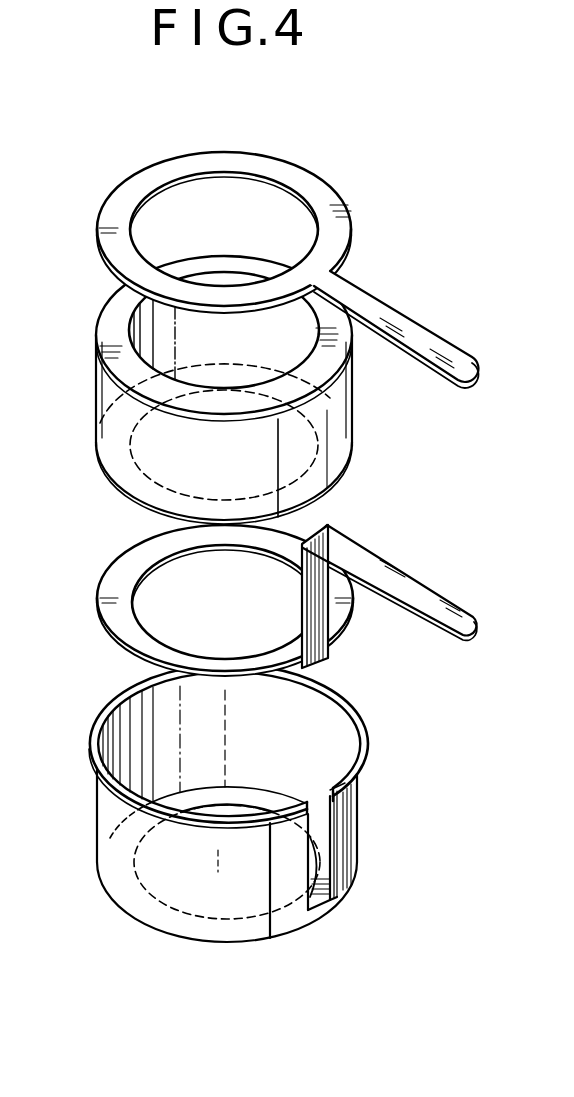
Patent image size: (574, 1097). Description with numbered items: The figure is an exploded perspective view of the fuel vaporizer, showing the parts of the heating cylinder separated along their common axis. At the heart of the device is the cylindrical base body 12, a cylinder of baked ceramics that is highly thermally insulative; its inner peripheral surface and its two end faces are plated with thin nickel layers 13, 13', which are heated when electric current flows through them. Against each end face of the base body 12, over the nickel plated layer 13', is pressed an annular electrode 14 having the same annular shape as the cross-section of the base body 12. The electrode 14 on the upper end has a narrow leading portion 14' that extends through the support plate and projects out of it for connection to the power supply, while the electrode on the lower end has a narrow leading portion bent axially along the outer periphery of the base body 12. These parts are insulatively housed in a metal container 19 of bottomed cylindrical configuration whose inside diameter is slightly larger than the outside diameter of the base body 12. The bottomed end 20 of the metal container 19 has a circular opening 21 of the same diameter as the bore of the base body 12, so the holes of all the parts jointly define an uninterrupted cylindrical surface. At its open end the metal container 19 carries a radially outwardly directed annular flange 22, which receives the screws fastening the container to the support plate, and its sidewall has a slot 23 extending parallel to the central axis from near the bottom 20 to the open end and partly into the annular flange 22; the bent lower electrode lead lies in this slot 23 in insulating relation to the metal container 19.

The cylindrical base body 12 is at (130, 457).
The nickel plated layer 13 is at (259, 330).
The nickel plated layer 13' is at (96, 346).
The electrode 14 is at (268, 391).
The narrow leading portion 14' is at (389, 325).
The metal container 19 is at (91, 861).
The bottomed end 20 is at (216, 925).
The circular opening 21 is at (312, 866).
The annular flange 22 is at (92, 740).
The slot 23 is at (333, 807).